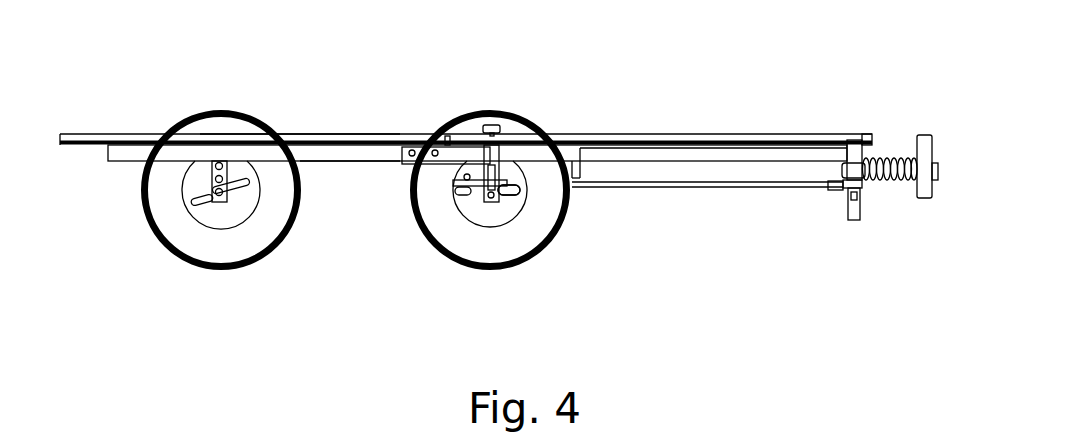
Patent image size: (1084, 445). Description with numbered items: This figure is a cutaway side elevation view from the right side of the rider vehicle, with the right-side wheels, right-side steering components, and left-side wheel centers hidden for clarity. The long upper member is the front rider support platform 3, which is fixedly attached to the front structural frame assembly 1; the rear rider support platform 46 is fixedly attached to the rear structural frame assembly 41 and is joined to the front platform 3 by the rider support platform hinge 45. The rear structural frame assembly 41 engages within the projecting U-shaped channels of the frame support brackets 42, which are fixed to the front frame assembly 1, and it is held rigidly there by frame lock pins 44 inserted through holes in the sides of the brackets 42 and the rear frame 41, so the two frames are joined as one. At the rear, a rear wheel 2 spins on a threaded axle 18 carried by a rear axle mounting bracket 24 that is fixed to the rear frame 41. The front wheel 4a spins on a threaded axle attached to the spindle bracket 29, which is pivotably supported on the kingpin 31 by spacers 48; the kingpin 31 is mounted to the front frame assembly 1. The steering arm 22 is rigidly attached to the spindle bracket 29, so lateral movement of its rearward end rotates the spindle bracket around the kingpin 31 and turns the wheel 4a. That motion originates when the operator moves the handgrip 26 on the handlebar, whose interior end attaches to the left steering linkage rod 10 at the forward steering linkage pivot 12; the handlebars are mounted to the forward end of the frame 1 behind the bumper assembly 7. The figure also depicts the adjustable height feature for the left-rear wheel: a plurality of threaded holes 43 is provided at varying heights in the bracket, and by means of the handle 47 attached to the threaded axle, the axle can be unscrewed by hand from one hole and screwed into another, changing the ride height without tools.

The front structural frame assembly 1 is at (682, 153).
The rear wheels 2 is at (200, 123).
The front rider support platform 3 is at (770, 135).
The front wheel 4a is at (527, 132).
The bumper assembly 7 is at (925, 137).
The left steering linkage rod 10 is at (720, 188).
The forward steering linkage pivot 12 is at (848, 192).
The threaded axle 18 is at (212, 198).
The steering arm 22 is at (462, 192).
The rear axle mounting bracket 24 is at (217, 202).
The handgrip 26 is at (853, 220).
The spindle bracket 29 is at (488, 203).
The kingpin 31 is at (492, 125).
The rear structural frame assembly 41 is at (333, 162).
The frame support brackets 42 is at (420, 160).
The threaded holes 43 is at (213, 165).
The frame lock pins 44 is at (432, 150).
The rider support platform hinge 45 is at (446, 136).
The rear rider support platform 46 is at (292, 137).
The handle 47 is at (243, 186).
The spacers 48 is at (497, 168).